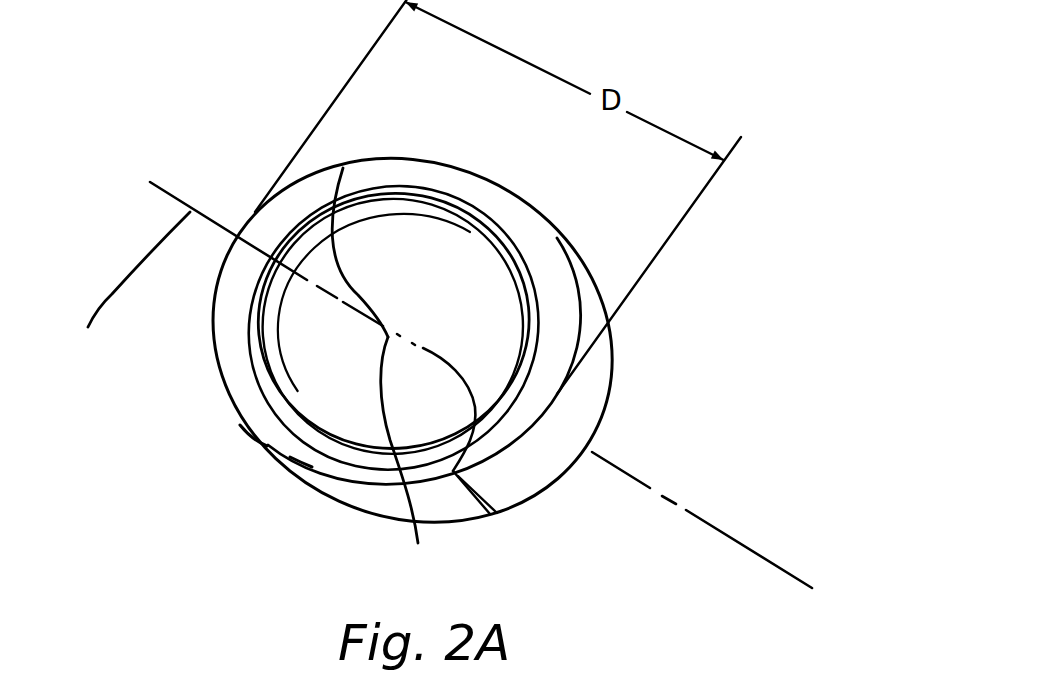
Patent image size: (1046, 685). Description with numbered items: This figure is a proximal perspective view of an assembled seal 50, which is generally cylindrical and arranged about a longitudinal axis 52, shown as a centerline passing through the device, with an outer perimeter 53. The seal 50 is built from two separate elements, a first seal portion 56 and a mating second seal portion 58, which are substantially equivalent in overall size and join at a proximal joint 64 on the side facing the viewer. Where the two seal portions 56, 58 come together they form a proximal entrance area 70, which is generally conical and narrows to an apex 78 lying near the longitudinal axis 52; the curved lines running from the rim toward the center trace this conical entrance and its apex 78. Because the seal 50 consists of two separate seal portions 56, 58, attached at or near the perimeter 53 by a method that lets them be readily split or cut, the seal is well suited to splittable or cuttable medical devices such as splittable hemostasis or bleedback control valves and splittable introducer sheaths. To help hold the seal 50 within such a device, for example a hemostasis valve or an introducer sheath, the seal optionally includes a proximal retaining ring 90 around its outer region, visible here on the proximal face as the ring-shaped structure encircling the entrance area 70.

The seal 50 is at (128, 118).
The longitudinal axis 52 is at (129, 287).
The perimeter 53 is at (303, 458).
The first seal portion 56 is at (267, 445).
The second seal portion 58 is at (441, 157).
The proximal joint 64 is at (474, 396).
The proximal entrance area 70 is at (297, 375).
The apex 78 is at (383, 374).
The proximal retaining ring 90 is at (362, 477).